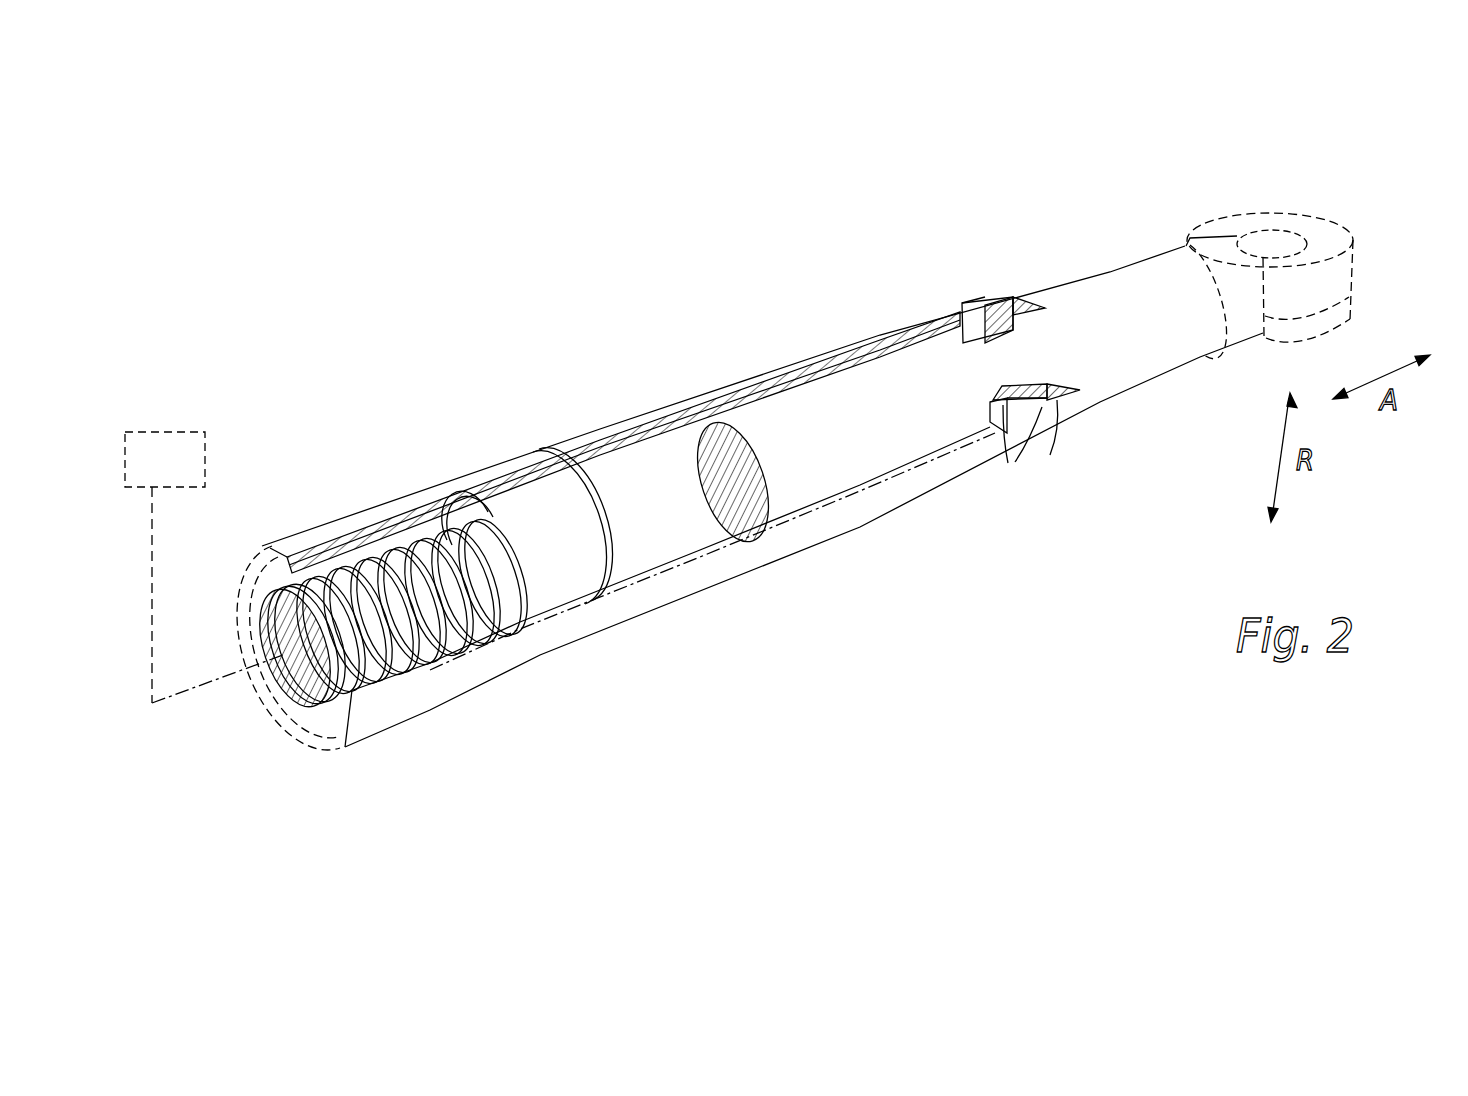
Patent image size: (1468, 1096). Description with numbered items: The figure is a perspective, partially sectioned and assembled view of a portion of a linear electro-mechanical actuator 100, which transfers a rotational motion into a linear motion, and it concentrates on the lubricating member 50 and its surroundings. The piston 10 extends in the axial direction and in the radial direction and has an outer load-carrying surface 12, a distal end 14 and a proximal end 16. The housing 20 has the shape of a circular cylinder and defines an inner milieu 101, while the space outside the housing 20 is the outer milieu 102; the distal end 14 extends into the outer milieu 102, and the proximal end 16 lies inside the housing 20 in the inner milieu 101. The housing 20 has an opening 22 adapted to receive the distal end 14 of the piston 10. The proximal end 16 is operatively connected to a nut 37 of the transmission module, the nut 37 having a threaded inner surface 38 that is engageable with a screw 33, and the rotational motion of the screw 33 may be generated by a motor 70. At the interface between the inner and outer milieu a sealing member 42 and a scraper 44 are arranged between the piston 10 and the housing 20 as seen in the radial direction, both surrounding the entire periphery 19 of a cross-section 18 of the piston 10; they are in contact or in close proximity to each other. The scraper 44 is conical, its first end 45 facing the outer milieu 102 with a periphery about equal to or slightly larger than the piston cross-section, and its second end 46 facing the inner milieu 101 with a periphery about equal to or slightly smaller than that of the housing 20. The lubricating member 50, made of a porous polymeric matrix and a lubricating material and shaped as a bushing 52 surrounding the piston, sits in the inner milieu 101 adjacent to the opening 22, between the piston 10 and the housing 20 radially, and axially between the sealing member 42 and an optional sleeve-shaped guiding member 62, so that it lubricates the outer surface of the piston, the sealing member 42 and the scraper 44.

The linear electro-mechanical actuator 100 is at (810, 463).
The piston 10 is at (810, 463).
The outer load-carrying surface 12 is at (1158, 347).
The distal end 14 is at (1263, 262).
The proximal end 16 is at (620, 515).
The cross-section 18 is at (713, 430).
The periphery 19 is at (766, 447).
The housing 20 is at (753, 562).
The opening 22 is at (1036, 362).
The screw 33 is at (400, 667).
The nut 37 is at (577, 572).
The threaded inner surface 38 is at (489, 530).
The sealing member 42 is at (1023, 260).
The scraper 44 is at (1018, 300).
The first end 45 is at (1064, 313).
The second end 46 is at (1012, 286).
The lubricating member 50 is at (1072, 501).
The bushing 52 is at (1072, 501).
The guiding member 62 is at (1007, 460).
The motor 70 is at (205, 453).
The inner milieu 101 is at (302, 589).
The outer milieu 102 is at (721, 480).